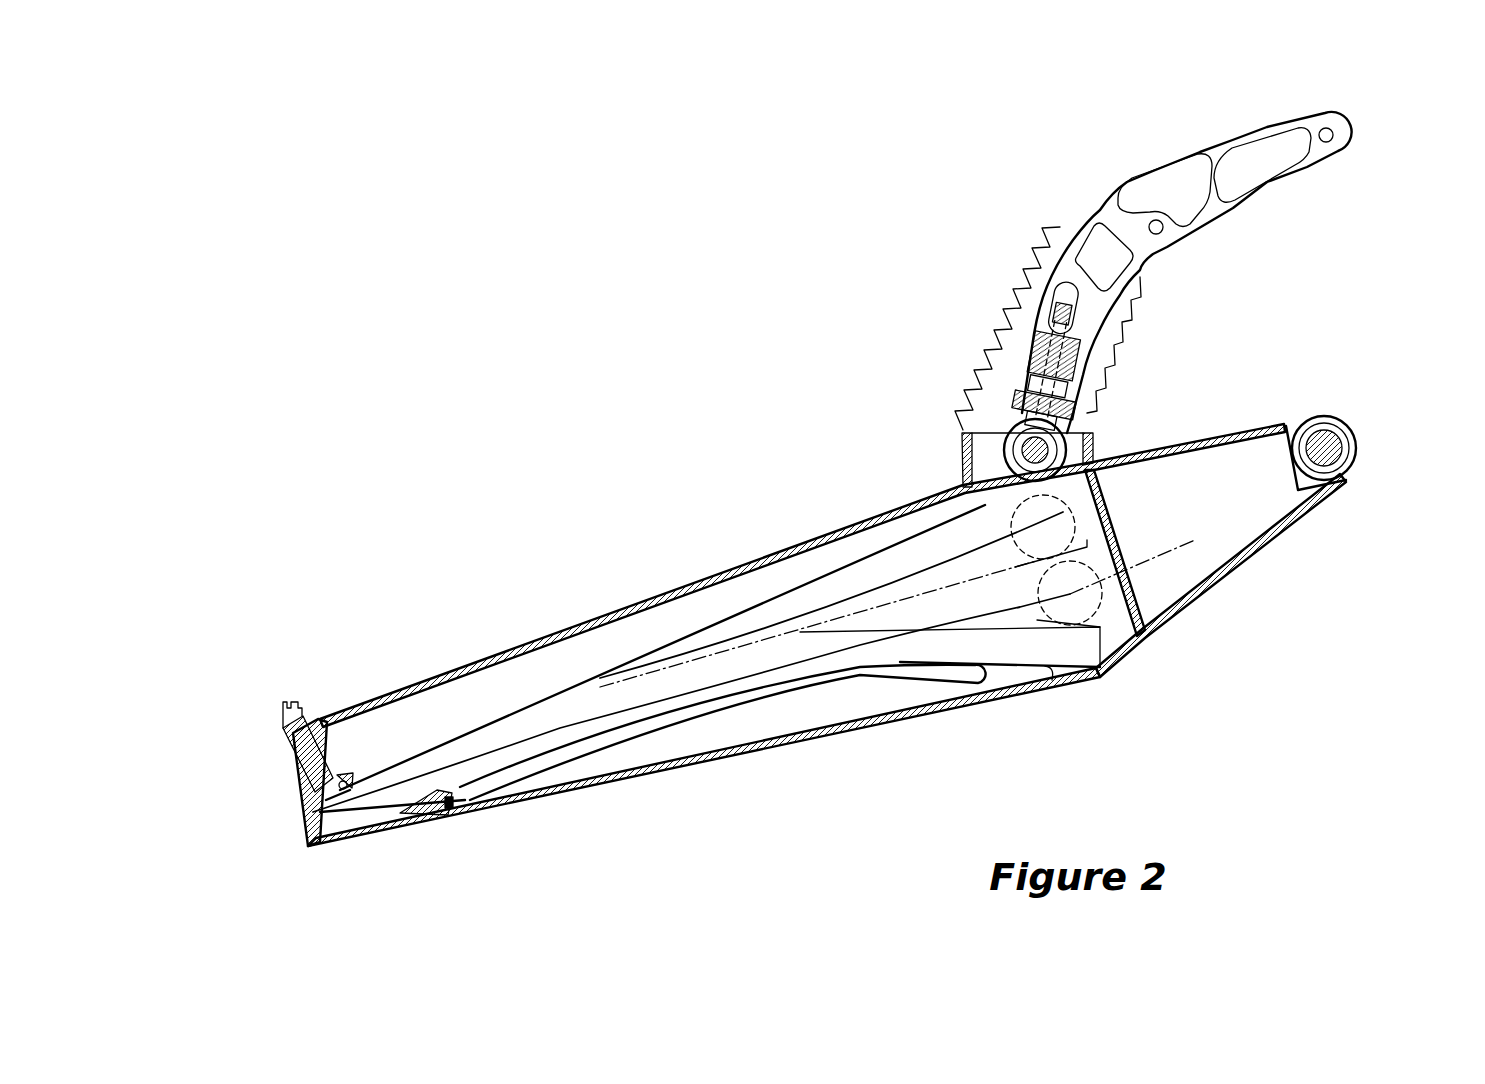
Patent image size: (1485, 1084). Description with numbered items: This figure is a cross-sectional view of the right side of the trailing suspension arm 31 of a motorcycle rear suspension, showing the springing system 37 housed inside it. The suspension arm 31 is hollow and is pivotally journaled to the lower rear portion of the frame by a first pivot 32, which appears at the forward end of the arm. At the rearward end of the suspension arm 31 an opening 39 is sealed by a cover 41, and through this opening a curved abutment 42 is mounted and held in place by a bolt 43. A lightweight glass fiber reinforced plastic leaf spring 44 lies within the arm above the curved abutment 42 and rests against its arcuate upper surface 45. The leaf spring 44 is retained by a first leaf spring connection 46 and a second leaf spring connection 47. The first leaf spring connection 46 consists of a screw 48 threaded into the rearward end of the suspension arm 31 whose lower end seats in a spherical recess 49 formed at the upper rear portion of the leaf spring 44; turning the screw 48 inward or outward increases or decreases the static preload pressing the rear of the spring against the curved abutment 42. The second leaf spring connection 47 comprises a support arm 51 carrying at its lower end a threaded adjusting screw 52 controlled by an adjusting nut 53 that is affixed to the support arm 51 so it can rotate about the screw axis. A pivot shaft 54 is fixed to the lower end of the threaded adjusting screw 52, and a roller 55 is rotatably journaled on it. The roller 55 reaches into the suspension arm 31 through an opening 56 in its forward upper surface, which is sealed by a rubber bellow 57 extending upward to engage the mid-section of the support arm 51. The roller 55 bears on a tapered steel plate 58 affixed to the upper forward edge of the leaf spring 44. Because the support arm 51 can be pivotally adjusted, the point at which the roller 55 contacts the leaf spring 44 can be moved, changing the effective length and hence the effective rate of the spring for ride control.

The trailing suspension arm 31 is at (771, 667).
The first pivot 32 is at (1357, 448).
The springing system 37 is at (487, 612).
The opening 39 is at (343, 827).
The cover 41 is at (300, 800).
The curved abutment 42 is at (996, 658).
The bolt 43 is at (450, 815).
The leaf spring 44 is at (935, 583).
The arcuate upper surface 45 is at (930, 662).
The first leaf spring connection 46 is at (345, 692).
The second leaf spring connection 47 is at (980, 272).
The screw 48 is at (295, 700).
The spherical recess 49 is at (345, 780).
The support arm 51 is at (1172, 160).
The threaded adjusting screw 52 is at (1055, 344).
The adjusting nut 53 is at (1017, 397).
The pivot shaft 54 is at (1067, 442).
The roller 55 is at (963, 477).
The opening 56 is at (1060, 455).
The rubber bellow 57 is at (1057, 222).
The tapered steel plate 58 is at (962, 477).